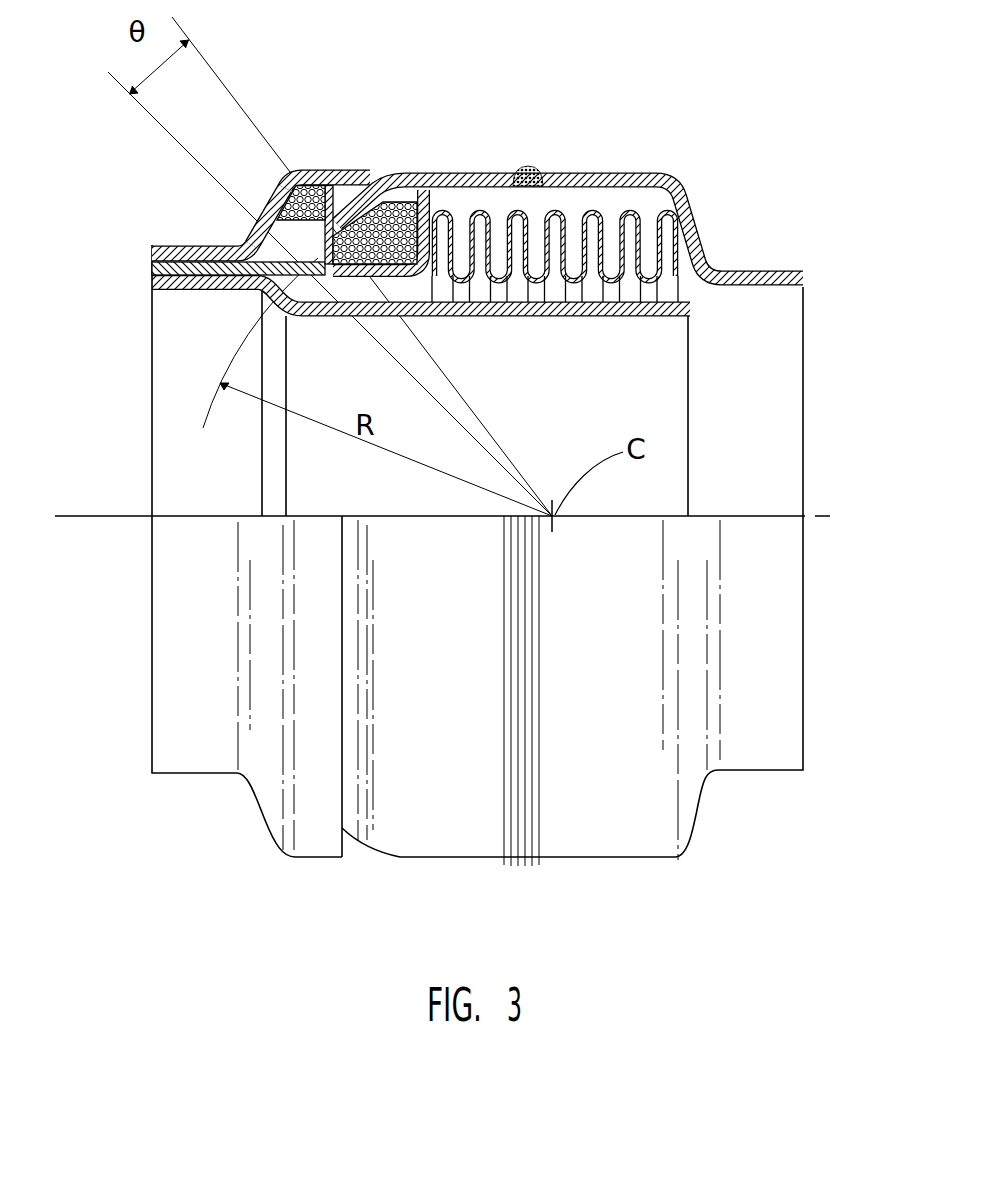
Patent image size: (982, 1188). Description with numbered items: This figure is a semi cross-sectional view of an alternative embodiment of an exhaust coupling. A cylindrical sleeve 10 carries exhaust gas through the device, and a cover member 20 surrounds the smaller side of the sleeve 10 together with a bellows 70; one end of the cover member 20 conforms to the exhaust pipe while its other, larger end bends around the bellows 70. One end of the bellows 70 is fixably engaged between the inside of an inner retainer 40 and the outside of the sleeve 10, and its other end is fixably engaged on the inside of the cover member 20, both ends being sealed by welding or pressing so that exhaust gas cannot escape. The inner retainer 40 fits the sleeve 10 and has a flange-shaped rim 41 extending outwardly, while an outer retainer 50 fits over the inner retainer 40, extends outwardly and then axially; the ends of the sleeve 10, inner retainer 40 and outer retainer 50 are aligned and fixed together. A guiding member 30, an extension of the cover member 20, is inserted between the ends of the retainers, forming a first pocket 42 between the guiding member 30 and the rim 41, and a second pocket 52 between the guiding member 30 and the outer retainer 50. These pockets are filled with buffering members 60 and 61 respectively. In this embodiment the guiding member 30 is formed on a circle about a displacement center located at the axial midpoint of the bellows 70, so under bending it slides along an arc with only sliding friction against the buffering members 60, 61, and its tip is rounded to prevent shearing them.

The sleeve 10 is at (643, 313).
The cover member 20 is at (698, 197).
The guiding member 30 is at (375, 172).
The inner retainer 40 is at (152, 292).
The flange-shaped rim 41 is at (435, 177).
The first pocket 42 is at (293, 313).
The outer retainer 50 is at (158, 245).
The second pocket 52 is at (290, 238).
The buffering member 60 is at (398, 195).
The buffering member 61 is at (327, 172).
The bellows 70 is at (637, 213).